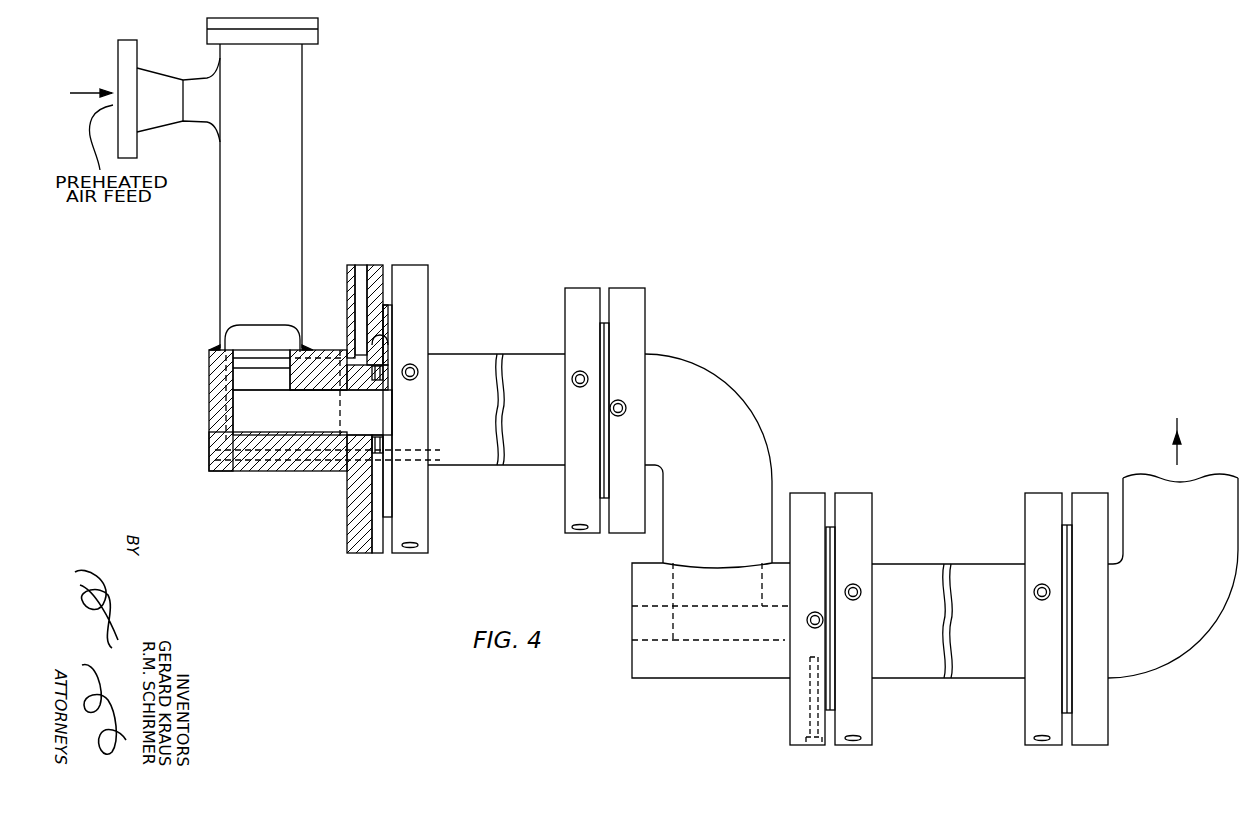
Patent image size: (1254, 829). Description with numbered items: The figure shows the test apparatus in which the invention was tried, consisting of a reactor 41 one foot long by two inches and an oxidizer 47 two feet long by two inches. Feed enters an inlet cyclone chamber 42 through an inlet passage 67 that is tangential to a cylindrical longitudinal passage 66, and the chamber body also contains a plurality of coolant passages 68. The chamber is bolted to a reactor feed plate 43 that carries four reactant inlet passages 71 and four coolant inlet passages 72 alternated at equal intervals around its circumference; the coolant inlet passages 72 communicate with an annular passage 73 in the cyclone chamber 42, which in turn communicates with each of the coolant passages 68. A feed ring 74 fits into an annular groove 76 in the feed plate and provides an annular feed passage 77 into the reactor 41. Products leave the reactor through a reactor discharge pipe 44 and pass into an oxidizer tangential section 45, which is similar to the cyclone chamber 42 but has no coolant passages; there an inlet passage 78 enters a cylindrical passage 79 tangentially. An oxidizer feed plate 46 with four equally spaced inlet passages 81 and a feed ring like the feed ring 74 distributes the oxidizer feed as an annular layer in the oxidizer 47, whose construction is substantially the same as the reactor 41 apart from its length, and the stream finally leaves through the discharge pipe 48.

The reactor 41 is at (536, 323).
The inlet cyclone chamber 42 is at (322, 466).
The reactor feed plate 43 is at (352, 538).
The reactor discharge pipe 44 is at (755, 415).
The oxidizer tangential section 45 is at (771, 682).
The oxidizer feed plate 46 is at (790, 725).
The oxidizer 47 is at (995, 682).
The discharge pipe 48 is at (1140, 664).
The cylindrical longitudinal passage 66 is at (338, 419).
The inlet passage 67 is at (245, 376).
The coolant passages 68 is at (245, 472).
The reactant inlet passages 71 is at (376, 490).
The coolant inlet passages 72 is at (357, 285).
The annular passage 73 is at (345, 350).
The feed ring 74 is at (385, 448).
The annular groove 76 is at (380, 350).
The annular feed passage 77 is at (375, 378).
The inlet passage 78 is at (650, 589).
The cylindrical passage 79 is at (700, 638).
The inlet passages 81 is at (810, 700).